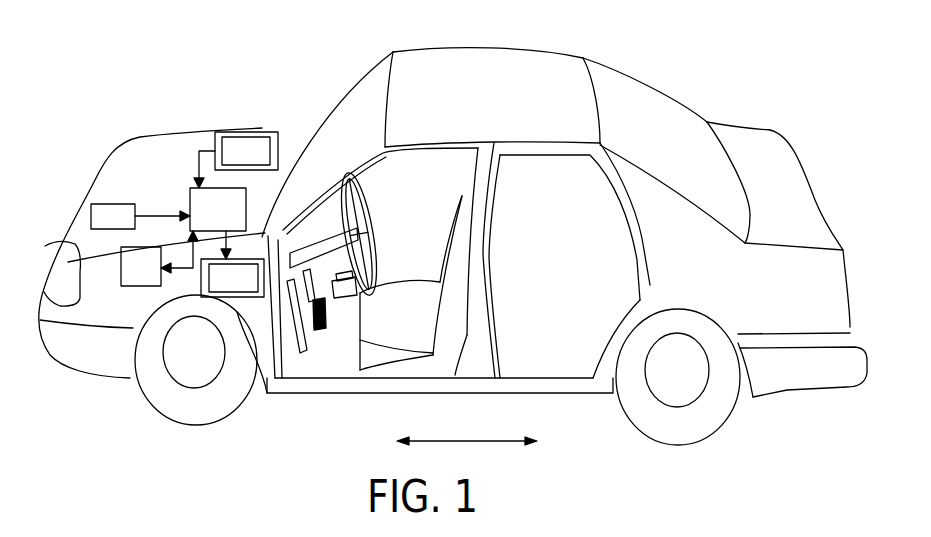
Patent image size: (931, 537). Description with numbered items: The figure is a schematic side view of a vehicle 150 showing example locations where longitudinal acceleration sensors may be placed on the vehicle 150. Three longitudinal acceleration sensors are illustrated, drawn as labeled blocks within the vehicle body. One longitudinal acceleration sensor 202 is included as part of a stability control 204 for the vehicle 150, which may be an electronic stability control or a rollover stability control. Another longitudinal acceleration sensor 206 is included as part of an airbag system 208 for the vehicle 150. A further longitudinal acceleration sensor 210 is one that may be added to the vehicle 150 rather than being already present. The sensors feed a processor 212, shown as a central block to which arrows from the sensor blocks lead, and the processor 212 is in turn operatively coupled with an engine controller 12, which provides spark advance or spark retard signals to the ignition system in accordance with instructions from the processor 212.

The vehicle 150 is at (483, 48).
The engine controller 12 is at (153, 281).
The longitudinal acceleration sensor 202 is at (250, 288).
The stability control 204 is at (247, 298).
The longitudinal acceleration sensor 206 is at (262, 163).
The airbag system 208 is at (253, 130).
The longitudinal acceleration sensor 210 is at (132, 226).
The processor 212 is at (235, 223).